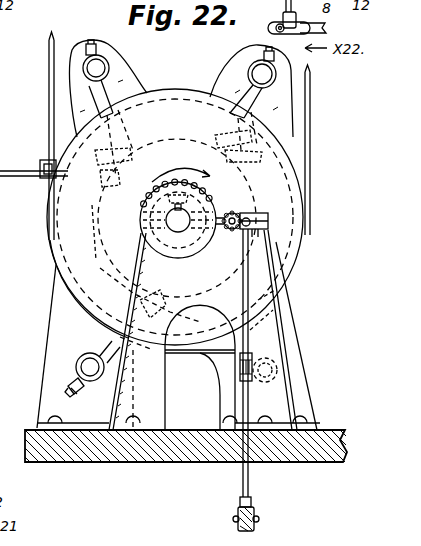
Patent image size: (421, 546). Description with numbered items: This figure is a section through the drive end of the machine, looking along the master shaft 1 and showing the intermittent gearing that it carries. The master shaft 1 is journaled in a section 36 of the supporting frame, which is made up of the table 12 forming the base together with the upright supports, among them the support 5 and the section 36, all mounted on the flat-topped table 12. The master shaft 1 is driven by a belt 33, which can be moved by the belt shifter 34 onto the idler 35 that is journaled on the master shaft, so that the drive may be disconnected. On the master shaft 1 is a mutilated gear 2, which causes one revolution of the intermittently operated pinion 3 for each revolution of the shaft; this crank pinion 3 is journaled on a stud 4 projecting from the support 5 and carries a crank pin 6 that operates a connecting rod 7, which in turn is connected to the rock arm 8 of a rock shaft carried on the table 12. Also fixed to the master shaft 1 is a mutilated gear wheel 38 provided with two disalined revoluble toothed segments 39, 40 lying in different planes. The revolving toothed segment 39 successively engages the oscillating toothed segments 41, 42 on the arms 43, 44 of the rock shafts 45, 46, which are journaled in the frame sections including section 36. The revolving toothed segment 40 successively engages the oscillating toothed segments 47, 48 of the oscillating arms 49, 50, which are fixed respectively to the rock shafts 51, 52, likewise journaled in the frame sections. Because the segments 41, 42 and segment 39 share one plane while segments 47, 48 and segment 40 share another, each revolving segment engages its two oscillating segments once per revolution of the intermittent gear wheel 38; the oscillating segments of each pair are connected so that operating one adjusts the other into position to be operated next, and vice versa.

The master shaft 1 is at (178, 222).
The mutilated gear 2 is at (152, 182).
The intermittently operated pinion 3 is at (232, 212).
The stud 4 is at (244, 217).
The support 5 is at (85, 402).
The crank pin 6 is at (250, 220).
The connecting rod 7 is at (263, 288).
The rock arm 8 is at (256, 513).
The table 12 is at (345, 431).
The belt 33 is at (49, 98).
The belt shifter 34 is at (45, 179).
The idler 35 is at (181, 92).
The frame section 36 is at (60, 340).
The mutilated gear wheel 38 is at (120, 263).
The revoluble toothed segment 39 is at (83, 230).
The revoluble toothed segment 40 is at (222, 267).
The oscillating toothed segment 41 is at (121, 145).
The oscillating toothed segment 42 is at (200, 367).
The arm 43 is at (104, 92).
The arm 44 is at (237, 340).
The rock shaft 45 is at (101, 66).
The rock shaft 46 is at (273, 366).
The oscillating toothed segment 47 is at (238, 137).
The oscillating toothed segment 48 is at (207, 299).
The oscillating arm 49 is at (250, 90).
The oscillating arm 50 is at (110, 346).
The rock shaft 51 is at (250, 69).
The rock shaft 52 is at (90, 367).